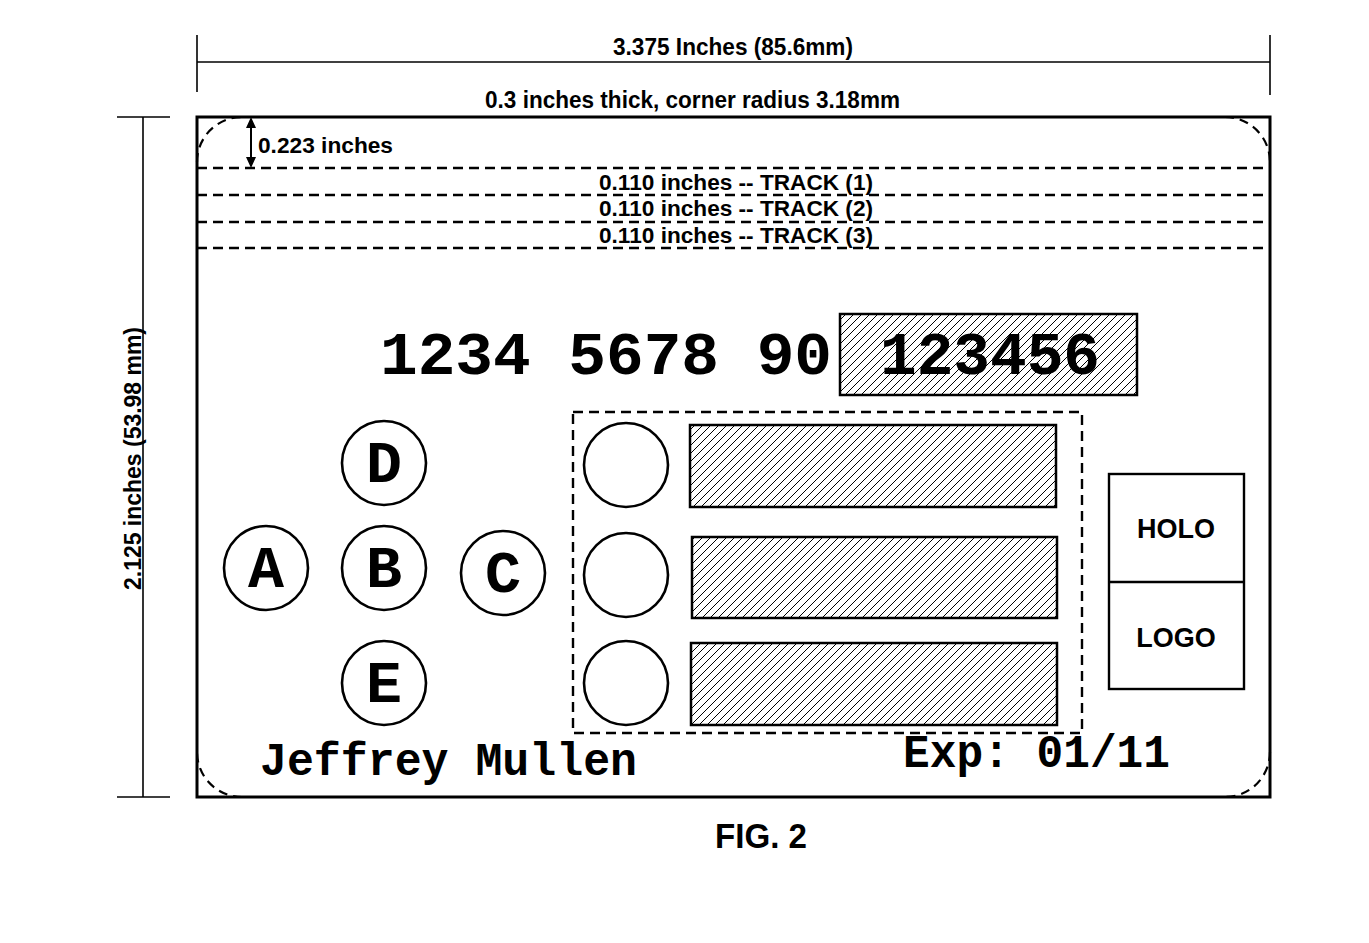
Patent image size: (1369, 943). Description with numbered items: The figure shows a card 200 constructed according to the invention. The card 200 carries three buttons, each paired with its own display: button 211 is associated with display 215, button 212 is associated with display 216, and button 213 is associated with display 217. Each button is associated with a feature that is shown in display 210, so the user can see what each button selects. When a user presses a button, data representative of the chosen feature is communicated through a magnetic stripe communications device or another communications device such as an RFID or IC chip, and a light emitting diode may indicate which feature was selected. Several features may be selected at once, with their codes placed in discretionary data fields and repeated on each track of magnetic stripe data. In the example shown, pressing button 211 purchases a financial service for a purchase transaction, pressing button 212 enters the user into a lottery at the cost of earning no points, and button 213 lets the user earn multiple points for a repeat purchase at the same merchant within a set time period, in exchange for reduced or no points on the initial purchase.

The card 200 is at (1337, 432).
The display 210 is at (757, 411).
The button 211 is at (588, 453).
The button 212 is at (593, 550).
The button 213 is at (593, 657).
The display 215 is at (718, 507).
The display 216 is at (717, 618).
The display 217 is at (710, 725).